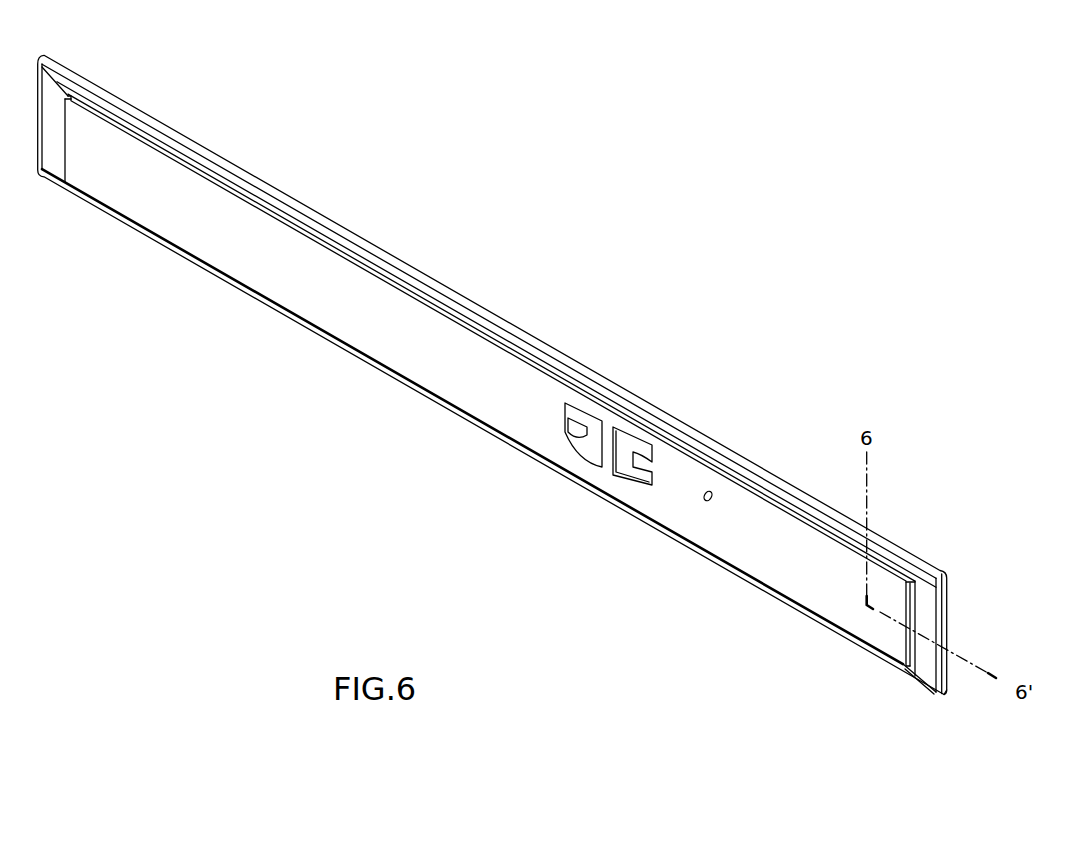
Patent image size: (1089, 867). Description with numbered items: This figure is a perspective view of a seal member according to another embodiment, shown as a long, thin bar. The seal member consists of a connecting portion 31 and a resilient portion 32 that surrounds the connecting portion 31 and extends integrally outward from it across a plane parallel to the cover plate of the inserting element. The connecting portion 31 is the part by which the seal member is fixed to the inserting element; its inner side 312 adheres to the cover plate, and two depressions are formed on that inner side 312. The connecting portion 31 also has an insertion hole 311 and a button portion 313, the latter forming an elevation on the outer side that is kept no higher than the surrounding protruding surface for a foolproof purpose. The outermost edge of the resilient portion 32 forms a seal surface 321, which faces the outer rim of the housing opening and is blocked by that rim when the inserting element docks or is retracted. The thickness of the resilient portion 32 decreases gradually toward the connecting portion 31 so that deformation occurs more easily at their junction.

The connecting portion 31 is at (738, 542).
The insertion hole 311 is at (702, 500).
The inner side 312 is at (836, 594).
The button portion 313 is at (593, 438).
The resilient portion 32 is at (805, 491).
The seal surface 321 is at (936, 701).